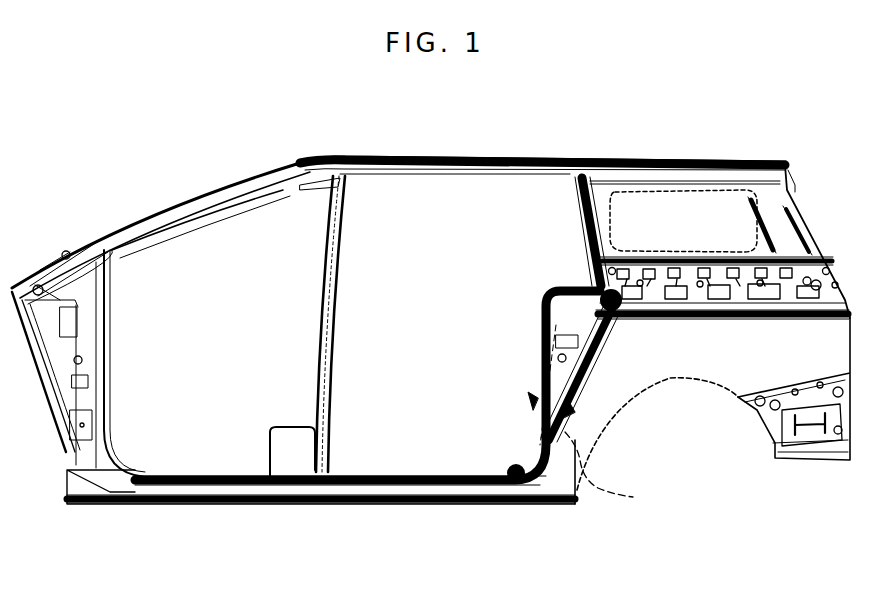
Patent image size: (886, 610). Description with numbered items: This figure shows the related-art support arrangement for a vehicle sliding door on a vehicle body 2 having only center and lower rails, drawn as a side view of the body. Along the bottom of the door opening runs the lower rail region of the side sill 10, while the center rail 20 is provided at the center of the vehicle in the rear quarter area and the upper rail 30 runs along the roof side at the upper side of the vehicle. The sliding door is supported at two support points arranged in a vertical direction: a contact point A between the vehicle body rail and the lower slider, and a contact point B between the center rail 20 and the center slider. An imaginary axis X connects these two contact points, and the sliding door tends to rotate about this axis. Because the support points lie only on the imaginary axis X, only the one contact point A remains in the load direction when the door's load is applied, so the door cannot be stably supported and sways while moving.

The vehicle side body 2 is at (160, 490).
The side sill 10 is at (400, 485).
The center rail 20 is at (684, 297).
The upper rail 30 is at (413, 158).
The contact point A is at (509, 485).
The contact point B is at (600, 290).
The imaginary axis X is at (643, 501).